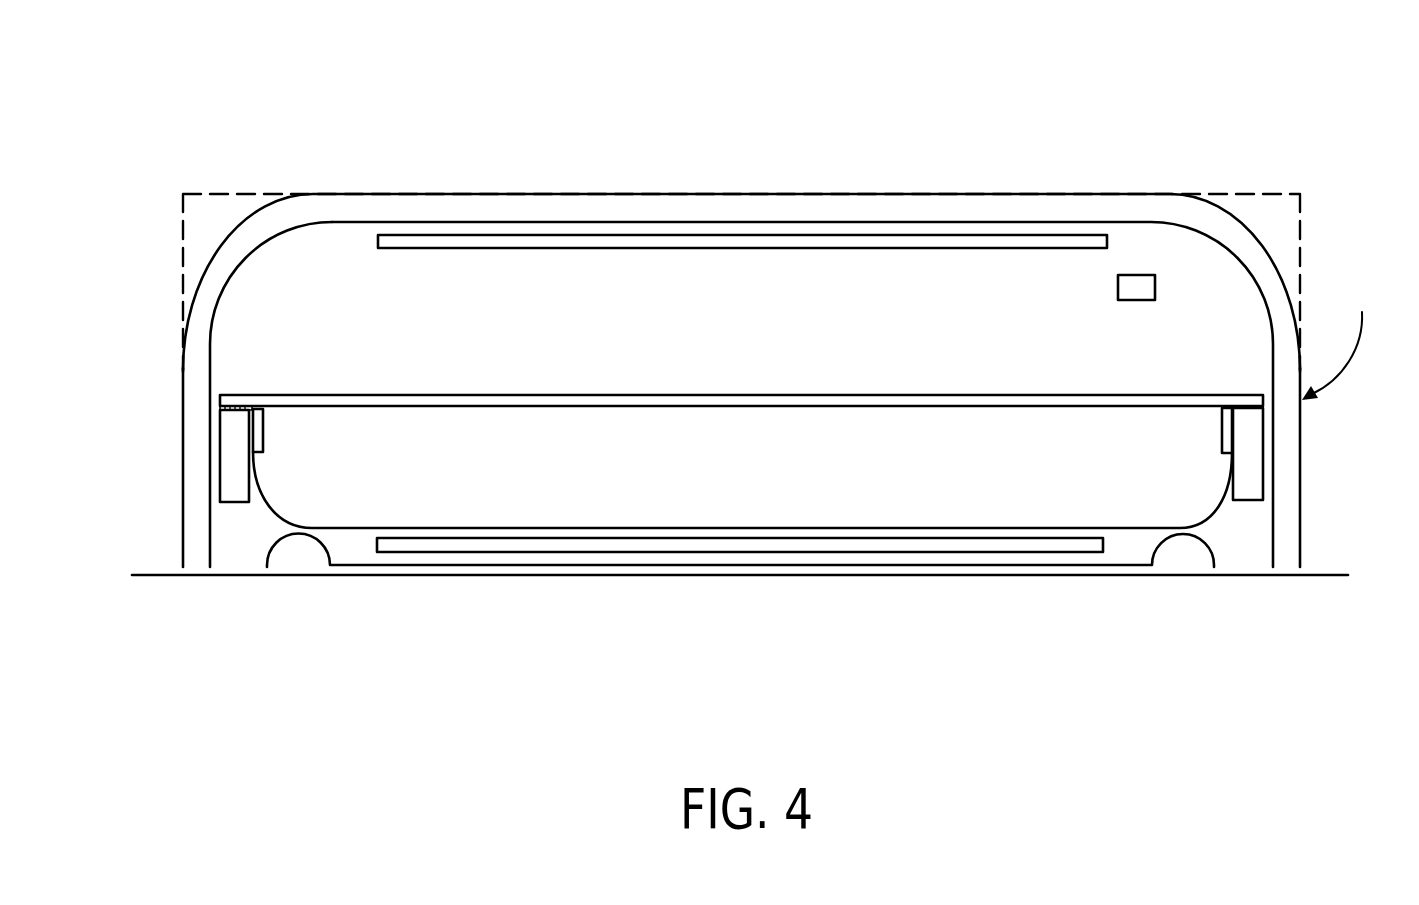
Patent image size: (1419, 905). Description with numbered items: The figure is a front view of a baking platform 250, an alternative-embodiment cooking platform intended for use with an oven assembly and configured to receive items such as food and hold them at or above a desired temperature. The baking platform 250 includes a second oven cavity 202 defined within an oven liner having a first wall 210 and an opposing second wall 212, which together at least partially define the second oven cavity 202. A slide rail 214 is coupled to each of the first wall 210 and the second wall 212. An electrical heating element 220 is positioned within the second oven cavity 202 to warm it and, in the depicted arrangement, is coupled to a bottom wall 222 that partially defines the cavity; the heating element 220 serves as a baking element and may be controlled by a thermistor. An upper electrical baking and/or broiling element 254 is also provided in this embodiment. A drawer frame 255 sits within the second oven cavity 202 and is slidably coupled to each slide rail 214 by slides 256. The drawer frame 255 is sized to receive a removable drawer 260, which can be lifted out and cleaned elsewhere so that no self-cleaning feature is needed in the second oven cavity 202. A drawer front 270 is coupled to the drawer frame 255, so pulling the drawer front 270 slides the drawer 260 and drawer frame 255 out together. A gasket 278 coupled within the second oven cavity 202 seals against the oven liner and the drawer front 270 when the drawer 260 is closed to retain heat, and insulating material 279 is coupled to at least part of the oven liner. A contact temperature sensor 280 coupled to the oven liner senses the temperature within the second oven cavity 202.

The baking platform 250 is at (238, 90).
The drawer front 270 is at (1274, 210).
The first wall 210 is at (183, 455).
The second wall 212 is at (1300, 455).
The gasket 278 is at (195, 373).
The second oven cavity 202 is at (749, 316).
The insulating material 279 is at (1343, 336).
The upper electrical baking and/or broiling element 254 is at (580, 222).
The contact temperature sensor 280 is at (1135, 283).
The drawer 260 is at (1010, 395).
The slides 256 is at (237, 398).
The slide rail 214 is at (235, 487).
The drawer frame 255 is at (233, 503).
The electrical heating element 220 is at (705, 566).
The bottom wall 222 is at (1178, 574).